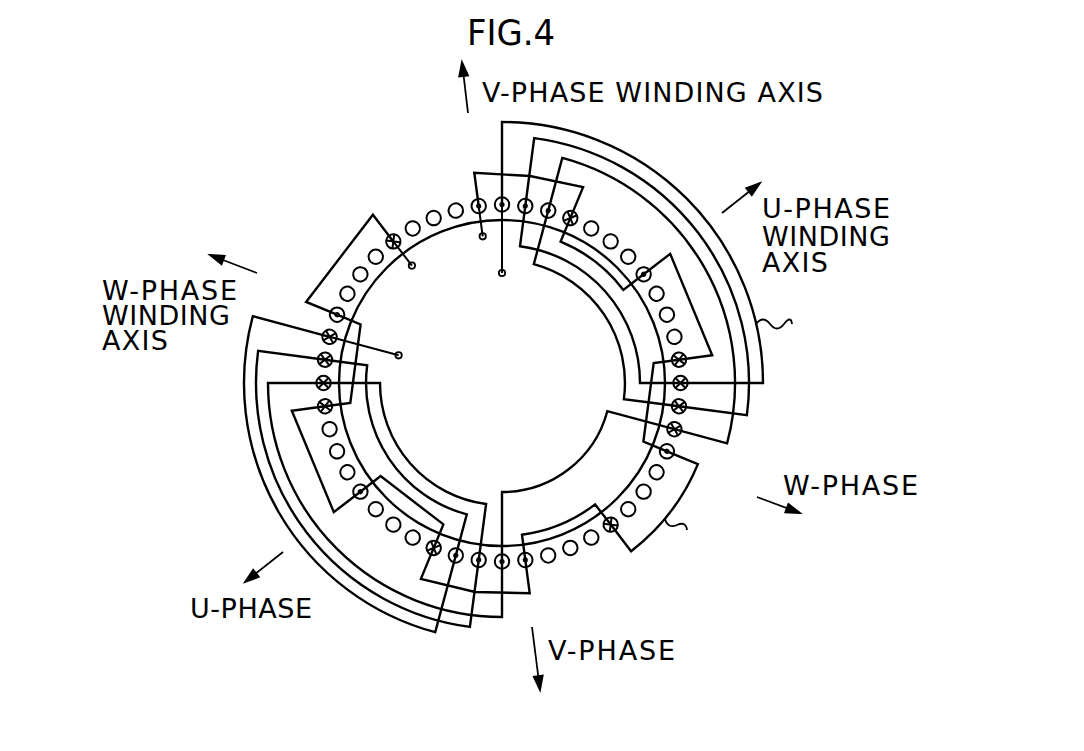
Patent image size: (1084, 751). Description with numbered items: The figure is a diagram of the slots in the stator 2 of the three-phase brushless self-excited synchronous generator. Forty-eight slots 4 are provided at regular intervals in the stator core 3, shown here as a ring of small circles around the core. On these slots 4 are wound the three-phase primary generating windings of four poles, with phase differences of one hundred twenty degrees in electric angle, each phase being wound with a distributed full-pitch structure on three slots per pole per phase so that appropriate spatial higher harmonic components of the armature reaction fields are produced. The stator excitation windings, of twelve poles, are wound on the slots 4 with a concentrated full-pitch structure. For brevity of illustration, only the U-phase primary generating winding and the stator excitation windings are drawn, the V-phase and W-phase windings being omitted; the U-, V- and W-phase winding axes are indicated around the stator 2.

The stator 2 is at (376, 177).
The stator core 3 is at (444, 172).
The slots 4 is at (343, 287).